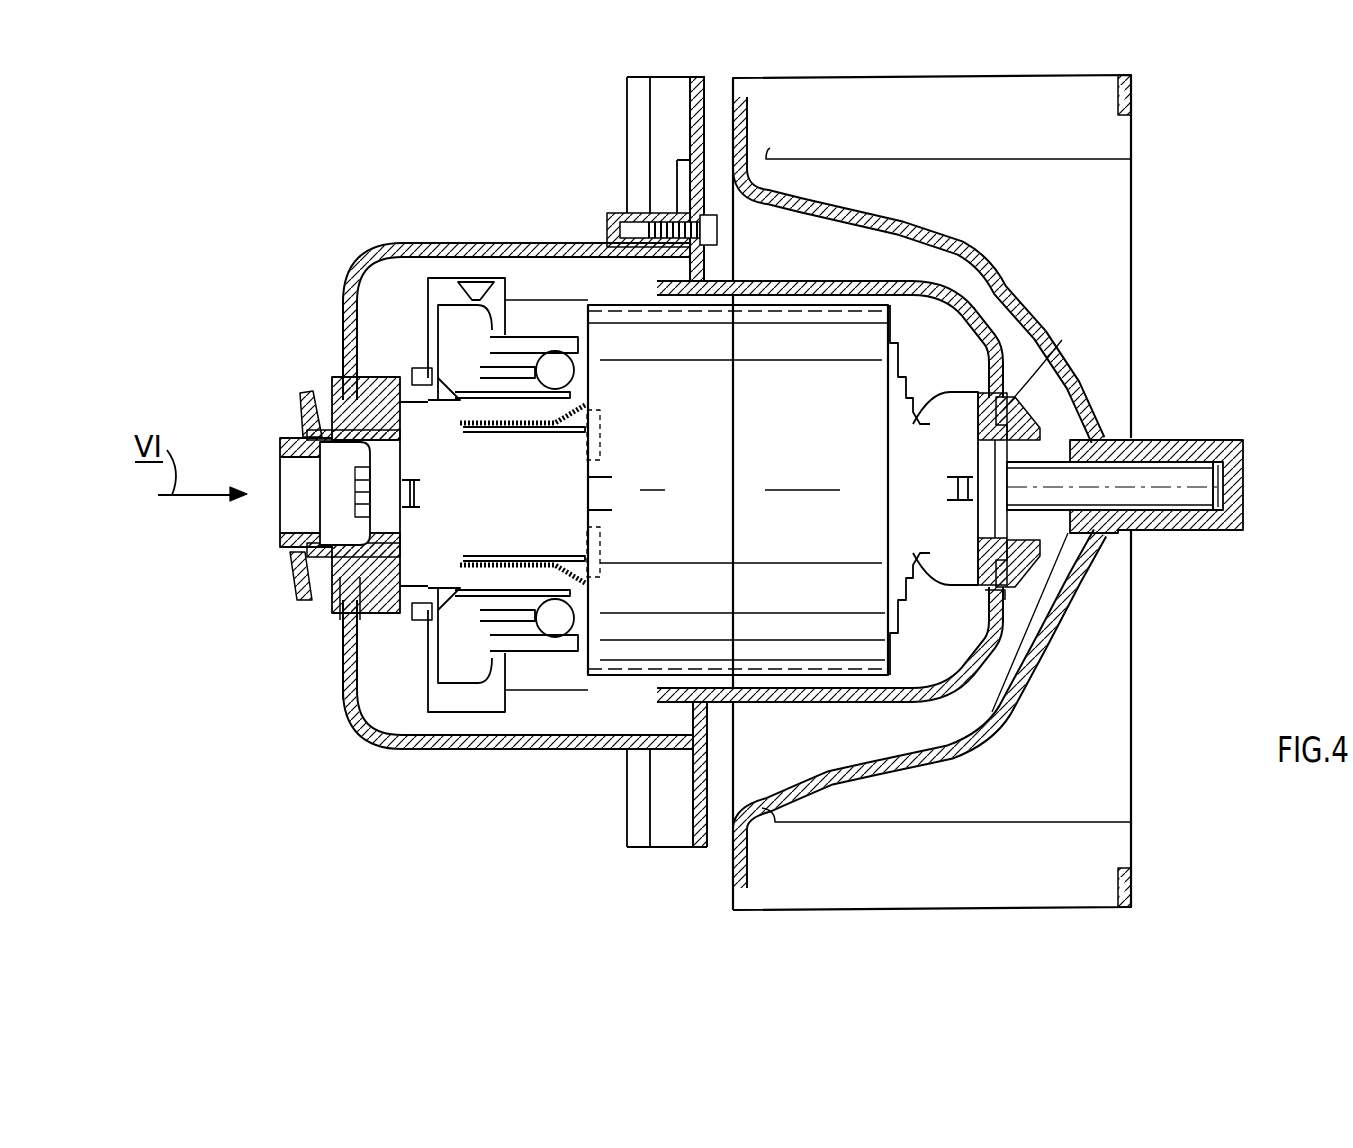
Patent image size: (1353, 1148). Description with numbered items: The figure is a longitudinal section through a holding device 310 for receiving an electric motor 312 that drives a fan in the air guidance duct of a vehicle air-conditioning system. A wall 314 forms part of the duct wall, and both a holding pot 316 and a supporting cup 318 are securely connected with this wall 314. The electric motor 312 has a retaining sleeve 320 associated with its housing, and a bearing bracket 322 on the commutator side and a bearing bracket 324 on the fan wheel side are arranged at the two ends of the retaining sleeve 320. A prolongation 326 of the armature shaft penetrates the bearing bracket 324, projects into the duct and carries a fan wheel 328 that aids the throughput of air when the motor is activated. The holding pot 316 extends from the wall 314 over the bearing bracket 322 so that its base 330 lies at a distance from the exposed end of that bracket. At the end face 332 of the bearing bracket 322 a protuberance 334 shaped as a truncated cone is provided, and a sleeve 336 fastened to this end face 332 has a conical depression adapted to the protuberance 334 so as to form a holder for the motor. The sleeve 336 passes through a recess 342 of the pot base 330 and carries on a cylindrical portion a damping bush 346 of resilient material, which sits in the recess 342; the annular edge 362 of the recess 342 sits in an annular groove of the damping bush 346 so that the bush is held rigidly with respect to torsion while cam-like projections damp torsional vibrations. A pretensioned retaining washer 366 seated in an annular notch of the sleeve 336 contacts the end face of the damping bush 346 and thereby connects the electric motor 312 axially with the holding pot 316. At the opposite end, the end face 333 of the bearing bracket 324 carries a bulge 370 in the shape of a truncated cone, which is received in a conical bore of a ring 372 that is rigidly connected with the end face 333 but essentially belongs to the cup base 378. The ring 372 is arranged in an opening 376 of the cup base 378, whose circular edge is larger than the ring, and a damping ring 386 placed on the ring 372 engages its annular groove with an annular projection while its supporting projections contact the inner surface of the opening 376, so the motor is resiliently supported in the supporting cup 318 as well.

The device 310 is at (632, 454).
The electric motor 312 is at (912, 348).
The wall 314 is at (693, 100).
The holding pot 316 is at (573, 752).
The supporting cup 318 is at (766, 283).
The retaining sleeve 320 is at (835, 662).
The bearing bracket 322 is at (600, 528).
The bearing bracket 324 is at (887, 470).
The prolongation 326 is at (1182, 502).
The fan wheel 328 is at (987, 492).
The base 330 is at (342, 323).
The end face 332 is at (397, 535).
The end face 333 is at (913, 487).
The protuberance 334 is at (397, 462).
The sleeve 336 is at (285, 540).
The recess 342 is at (313, 397).
The damping bush 346 is at (307, 573).
The annular edge 362 is at (335, 620).
The retaining washer 366 is at (295, 415).
The bulge 370 is at (982, 457).
The ring 372 is at (985, 593).
The opening 376 is at (1003, 410).
The cup base 378 is at (1010, 598).
The damping ring 386 is at (1031, 405).